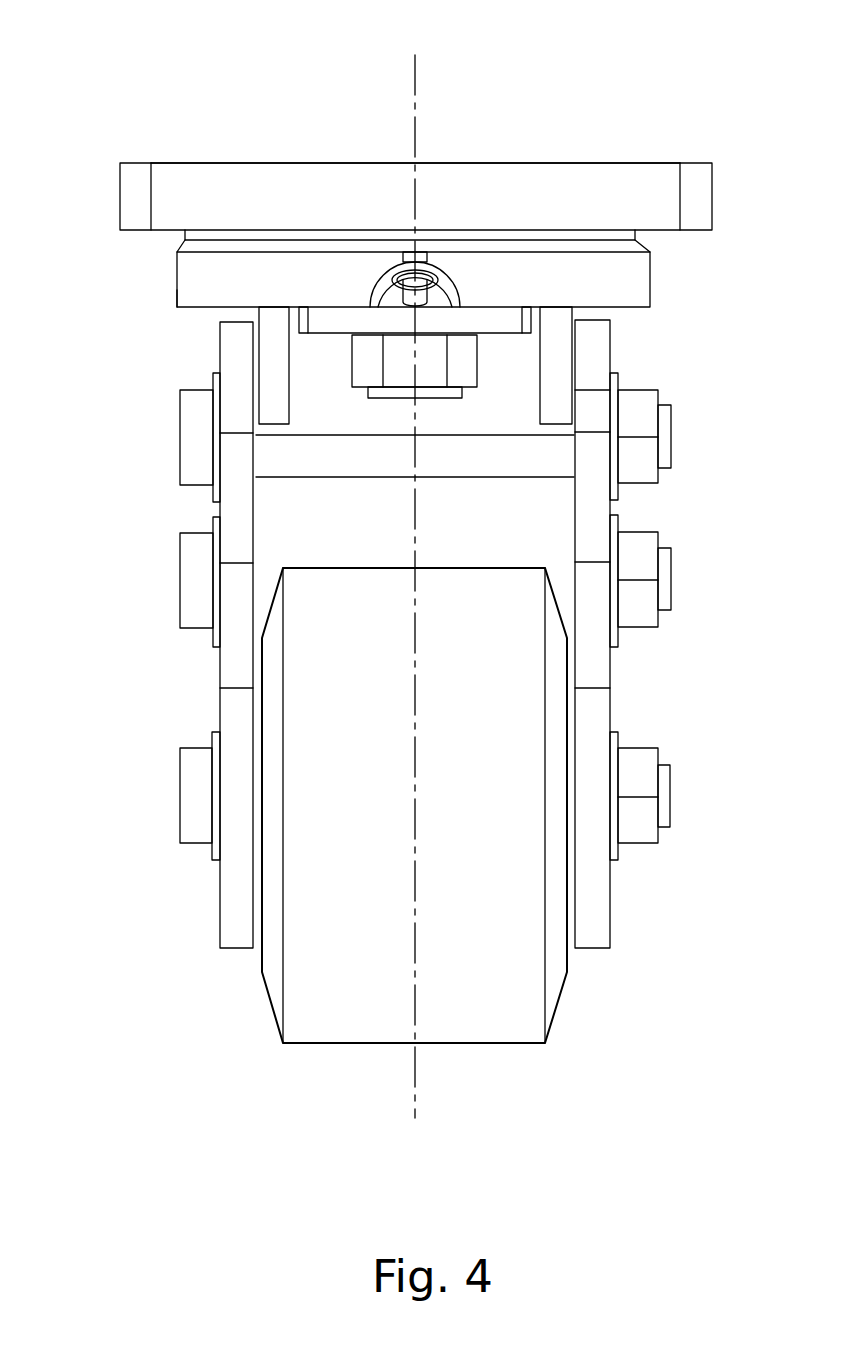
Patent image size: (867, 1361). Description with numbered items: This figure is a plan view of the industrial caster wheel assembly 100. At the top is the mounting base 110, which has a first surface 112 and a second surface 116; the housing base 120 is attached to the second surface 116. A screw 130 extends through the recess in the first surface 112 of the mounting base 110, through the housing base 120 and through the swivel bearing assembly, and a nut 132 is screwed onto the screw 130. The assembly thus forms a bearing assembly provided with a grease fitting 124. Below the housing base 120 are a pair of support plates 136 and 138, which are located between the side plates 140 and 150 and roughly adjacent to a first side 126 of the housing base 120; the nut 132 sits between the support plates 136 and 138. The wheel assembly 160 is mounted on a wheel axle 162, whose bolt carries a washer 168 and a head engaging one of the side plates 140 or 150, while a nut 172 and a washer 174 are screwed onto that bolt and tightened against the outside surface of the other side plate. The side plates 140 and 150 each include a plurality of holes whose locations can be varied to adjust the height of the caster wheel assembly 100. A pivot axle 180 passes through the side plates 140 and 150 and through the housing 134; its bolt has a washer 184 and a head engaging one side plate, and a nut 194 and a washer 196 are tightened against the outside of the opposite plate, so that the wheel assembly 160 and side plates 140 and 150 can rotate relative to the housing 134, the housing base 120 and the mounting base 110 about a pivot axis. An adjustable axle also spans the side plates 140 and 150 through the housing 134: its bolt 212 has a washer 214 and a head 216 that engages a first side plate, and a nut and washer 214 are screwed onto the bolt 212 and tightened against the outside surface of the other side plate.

The industrial caster wheel assembly 100 is at (684, 58).
The mounting base 110 is at (698, 203).
The first surface 112 is at (537, 163).
The second surface 116 is at (162, 231).
The housing base 120 is at (635, 295).
The grease fitting 124 is at (433, 296).
The first side 126 is at (190, 308).
The screw 130 is at (397, 398).
The nut 132 is at (460, 370).
The housing 134 is at (327, 534).
The support plate 136 is at (555, 358).
The support plate 138 is at (273, 387).
The side plate 140 is at (237, 683).
The side plate 150 is at (592, 660).
The wheel assembly 160 is at (335, 1090).
The wheel axle 162 is at (188, 812).
The washer 168 is at (207, 860).
The nut 172 is at (637, 825).
The washer 174 is at (615, 860).
The pivot axle 180 is at (187, 460).
The washer 184 is at (208, 498).
The nut 194 is at (642, 448).
The washer 196 is at (617, 493).
The bolt 212 is at (647, 603).
The washer 214 is at (209, 637).
The head 216 is at (195, 588).